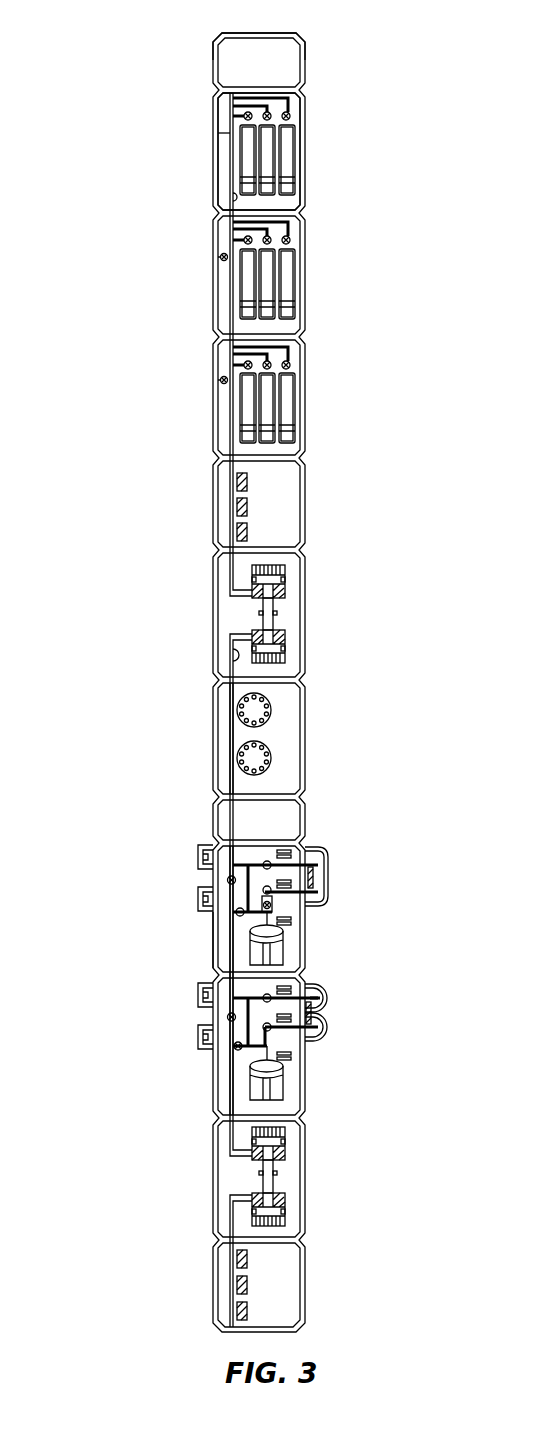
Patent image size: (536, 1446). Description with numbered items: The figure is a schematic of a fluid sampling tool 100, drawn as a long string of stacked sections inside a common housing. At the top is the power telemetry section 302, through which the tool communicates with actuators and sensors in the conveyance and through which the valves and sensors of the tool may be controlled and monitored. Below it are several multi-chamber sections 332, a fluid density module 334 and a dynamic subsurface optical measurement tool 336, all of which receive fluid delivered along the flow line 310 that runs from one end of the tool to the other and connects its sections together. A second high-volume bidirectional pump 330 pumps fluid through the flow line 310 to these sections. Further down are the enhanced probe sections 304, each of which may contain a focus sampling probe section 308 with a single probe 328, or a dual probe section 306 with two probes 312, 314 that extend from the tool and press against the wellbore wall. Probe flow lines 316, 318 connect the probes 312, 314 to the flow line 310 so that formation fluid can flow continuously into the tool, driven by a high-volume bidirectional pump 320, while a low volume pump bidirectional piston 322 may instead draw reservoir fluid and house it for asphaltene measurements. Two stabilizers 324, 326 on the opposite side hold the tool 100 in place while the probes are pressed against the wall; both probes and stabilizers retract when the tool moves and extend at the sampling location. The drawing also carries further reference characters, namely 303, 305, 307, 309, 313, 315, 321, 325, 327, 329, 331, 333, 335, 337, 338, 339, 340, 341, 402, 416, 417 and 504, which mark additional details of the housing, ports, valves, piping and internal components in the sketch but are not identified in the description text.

The fluid sampling tool 100 is at (158, 52).
The power telemetry section 302 is at (301, 84).
The top sub 303 is at (302, 46).
The enhanced probe section 304 is at (214, 935).
The housing wall 305 is at (214, 960).
The dual probe section 306 is at (332, 1021).
The lower piston housing 307 is at (214, 1108).
The focus sampling probe section 308 is at (330, 877).
The port valve 309 is at (322, 893).
The flow line 310 is at (233, 970).
The probe 312 is at (320, 989).
The pipe outlet 313 is at (328, 1000).
The probe 314 is at (320, 1040).
The inner port 315 is at (327, 1030).
The probe flow line 316 is at (309, 983).
The probe flow line 318 is at (310, 1046).
The high-volume bidirectional pump 320 is at (277, 1185).
The piston rod 321 is at (276, 1172).
The low volume pump bidirectional piston 322 is at (283, 946).
The stabilizer 324 is at (205, 864).
The side fitting outer 325 is at (205, 846).
The stabilizer 326 is at (205, 905).
The side fitting outer 327 is at (205, 888).
The single probe 328 is at (312, 849).
The inner port loop 329 is at (323, 862).
The second high-volume bidirectional pump 330 is at (275, 613).
The piston rod 331 is at (257, 622).
The multi-chamber section 332 is at (302, 156).
The cylinder section 333 is at (214, 158).
The fluid density module 334 is at (302, 508).
The bottom section 335 is at (302, 1296).
The dynamic subsurface optical measurement tool 336 is at (302, 763).
The upper connector 337 is at (302, 726).
The cylinder band 338 is at (297, 196).
The cylinder liner 339 is at (286, 163).
The fluid conduit 340 is at (232, 283).
The conduit fitting 341 is at (233, 197).
The connector section 402 is at (224, 752).
The conduit segment 416 is at (224, 758).
The conduit fitting 417 is at (233, 655).
The manifold 504 is at (243, 147).